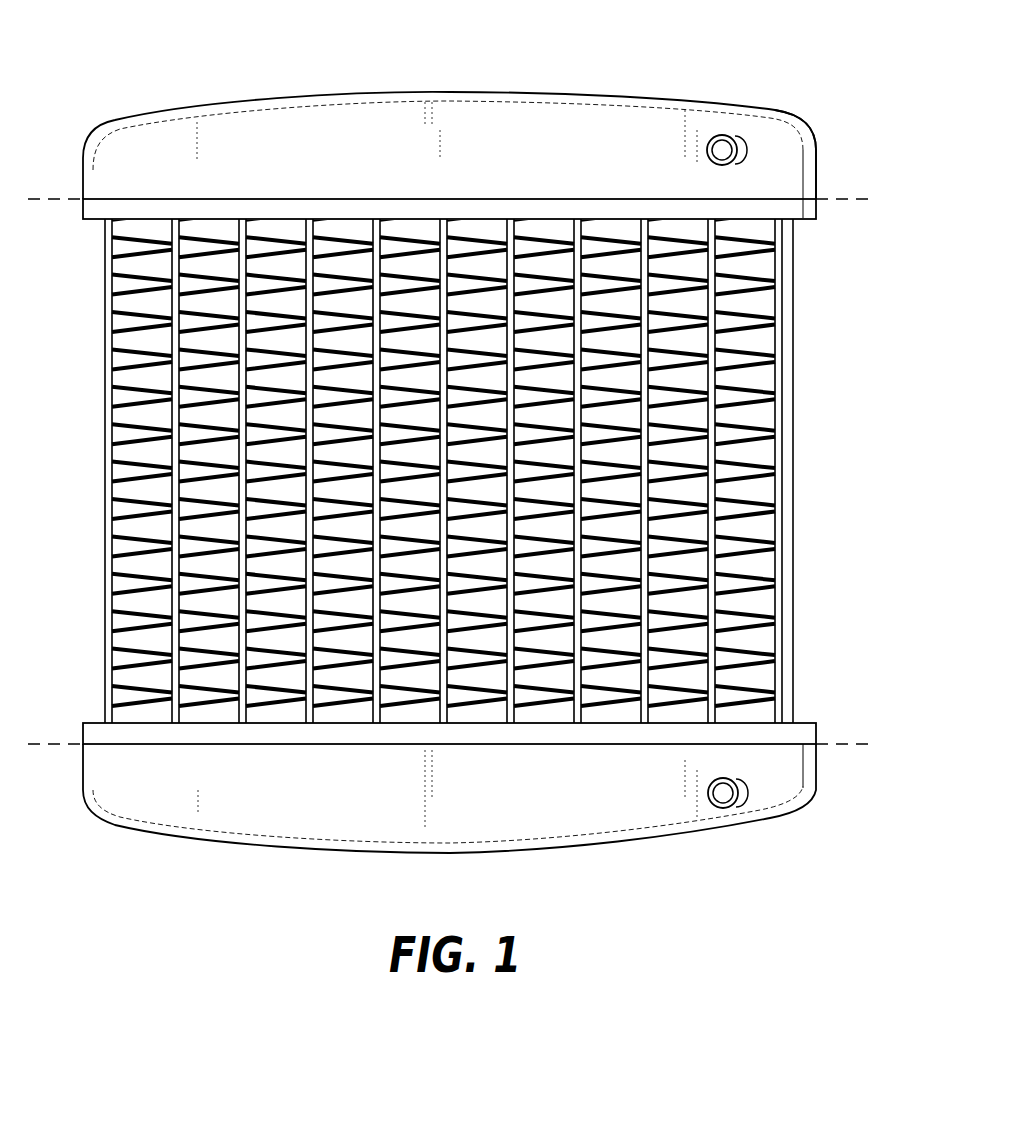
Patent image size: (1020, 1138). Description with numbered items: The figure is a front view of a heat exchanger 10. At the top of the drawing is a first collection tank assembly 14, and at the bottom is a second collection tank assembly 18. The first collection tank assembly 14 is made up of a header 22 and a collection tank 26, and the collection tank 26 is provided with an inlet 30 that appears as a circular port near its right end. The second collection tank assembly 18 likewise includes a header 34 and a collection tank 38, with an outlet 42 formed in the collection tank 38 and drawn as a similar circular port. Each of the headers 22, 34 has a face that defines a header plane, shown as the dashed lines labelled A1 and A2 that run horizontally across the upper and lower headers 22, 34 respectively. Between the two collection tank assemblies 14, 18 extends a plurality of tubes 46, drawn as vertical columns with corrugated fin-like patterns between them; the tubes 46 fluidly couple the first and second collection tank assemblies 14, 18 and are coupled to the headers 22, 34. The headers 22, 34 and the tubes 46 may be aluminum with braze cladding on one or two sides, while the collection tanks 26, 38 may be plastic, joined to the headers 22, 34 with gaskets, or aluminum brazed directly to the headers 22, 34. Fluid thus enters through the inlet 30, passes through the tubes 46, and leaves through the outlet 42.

The heat exchanger 10 is at (657, 56).
The first collection tank assembly 14 is at (62, 133).
The second collection tank assembly 18 is at (828, 810).
The header 22 is at (762, 210).
The collection tank 26 is at (813, 145).
The inlet 30 is at (722, 148).
The header 34 is at (780, 738).
The collection tank 38 is at (605, 818).
The outlet 42 is at (723, 795).
The tubes 46 is at (612, 443).
The header plane A1 is at (860, 200).
The header plane A2 is at (848, 744).